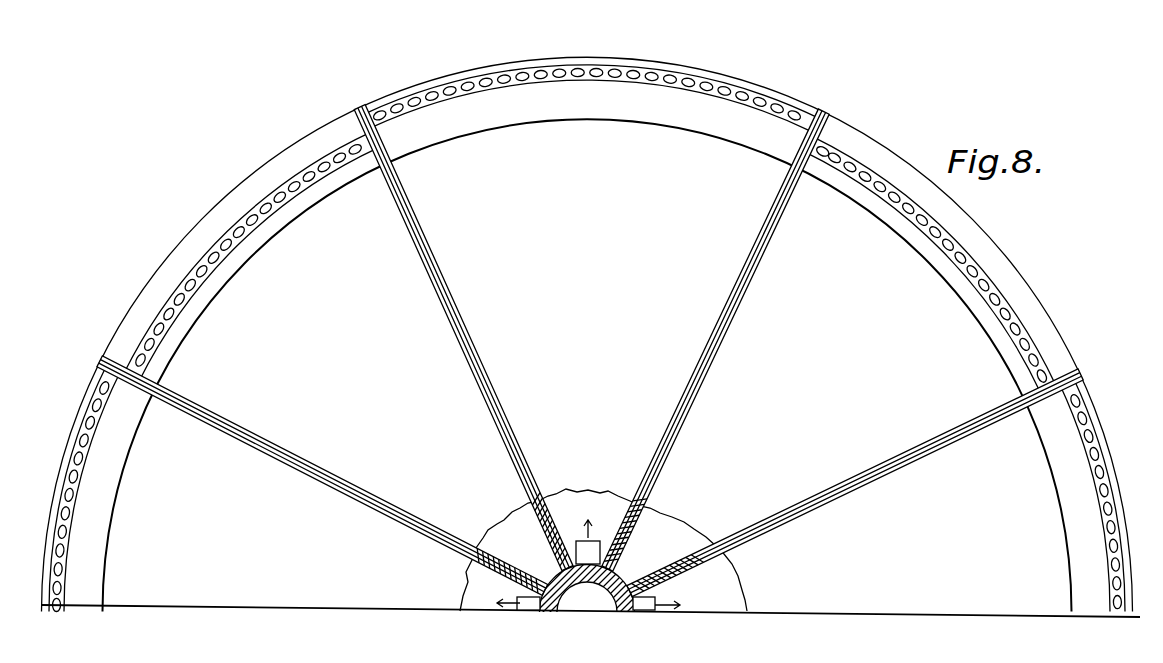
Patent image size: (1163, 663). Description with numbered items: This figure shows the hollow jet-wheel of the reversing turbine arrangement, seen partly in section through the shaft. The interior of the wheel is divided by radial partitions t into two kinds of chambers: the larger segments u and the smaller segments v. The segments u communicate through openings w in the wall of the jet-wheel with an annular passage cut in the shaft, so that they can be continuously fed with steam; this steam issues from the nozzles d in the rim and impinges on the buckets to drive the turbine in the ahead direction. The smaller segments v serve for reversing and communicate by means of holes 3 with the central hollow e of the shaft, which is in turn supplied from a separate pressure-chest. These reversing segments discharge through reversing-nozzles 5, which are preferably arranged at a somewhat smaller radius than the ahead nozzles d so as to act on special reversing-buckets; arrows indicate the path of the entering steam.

The nozzles d is at (612, 70).
The reversing-nozzles 5 is at (587, 365).
The radial partitions t is at (460, 332).
The segments u is at (615, 395).
The segments v is at (583, 348).
The central hollow e is at (605, 585).
The openings w is at (585, 558).
The holes 3 is at (633, 562).